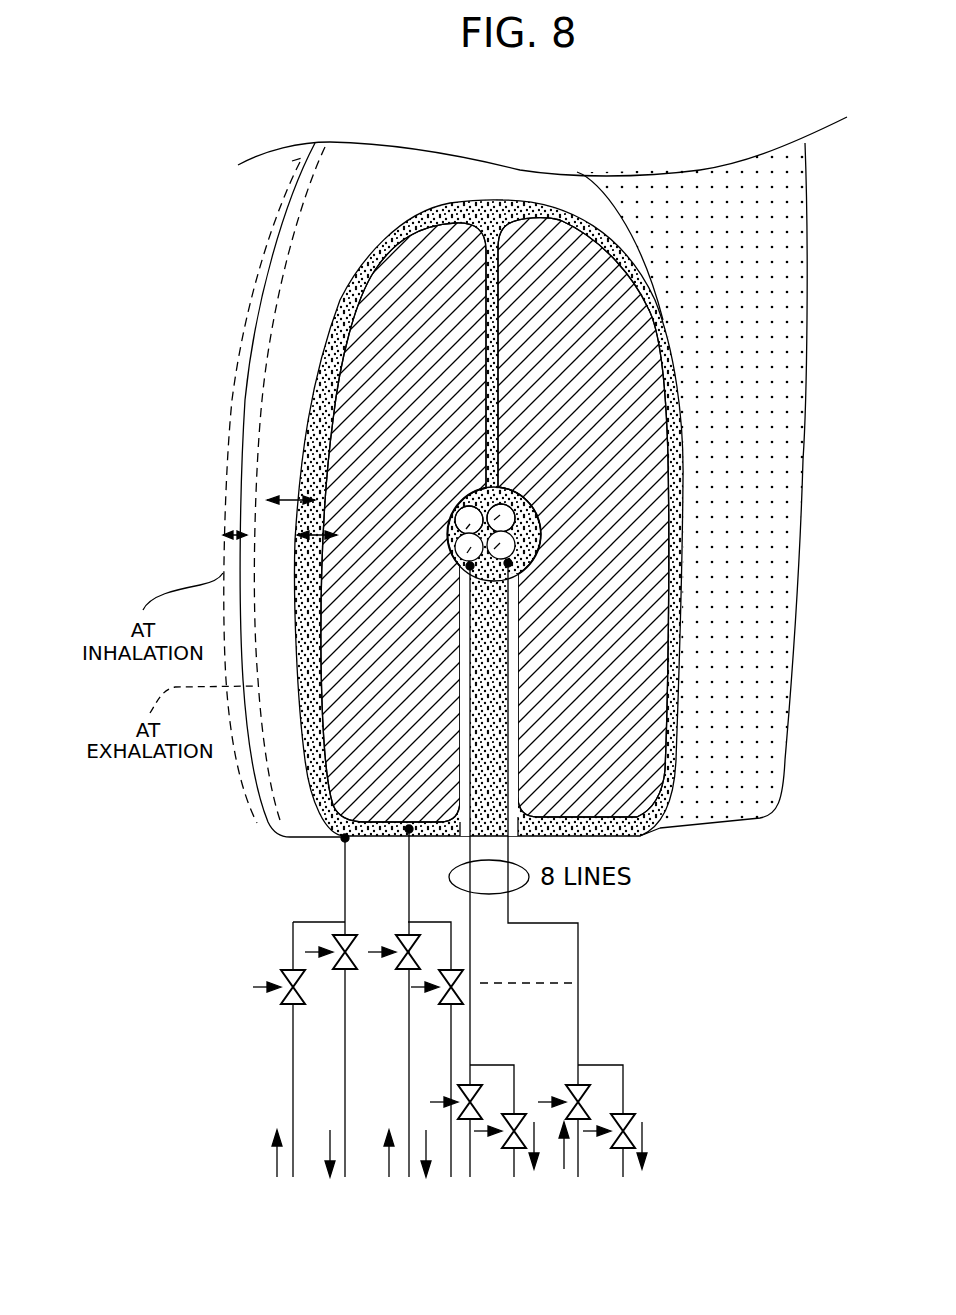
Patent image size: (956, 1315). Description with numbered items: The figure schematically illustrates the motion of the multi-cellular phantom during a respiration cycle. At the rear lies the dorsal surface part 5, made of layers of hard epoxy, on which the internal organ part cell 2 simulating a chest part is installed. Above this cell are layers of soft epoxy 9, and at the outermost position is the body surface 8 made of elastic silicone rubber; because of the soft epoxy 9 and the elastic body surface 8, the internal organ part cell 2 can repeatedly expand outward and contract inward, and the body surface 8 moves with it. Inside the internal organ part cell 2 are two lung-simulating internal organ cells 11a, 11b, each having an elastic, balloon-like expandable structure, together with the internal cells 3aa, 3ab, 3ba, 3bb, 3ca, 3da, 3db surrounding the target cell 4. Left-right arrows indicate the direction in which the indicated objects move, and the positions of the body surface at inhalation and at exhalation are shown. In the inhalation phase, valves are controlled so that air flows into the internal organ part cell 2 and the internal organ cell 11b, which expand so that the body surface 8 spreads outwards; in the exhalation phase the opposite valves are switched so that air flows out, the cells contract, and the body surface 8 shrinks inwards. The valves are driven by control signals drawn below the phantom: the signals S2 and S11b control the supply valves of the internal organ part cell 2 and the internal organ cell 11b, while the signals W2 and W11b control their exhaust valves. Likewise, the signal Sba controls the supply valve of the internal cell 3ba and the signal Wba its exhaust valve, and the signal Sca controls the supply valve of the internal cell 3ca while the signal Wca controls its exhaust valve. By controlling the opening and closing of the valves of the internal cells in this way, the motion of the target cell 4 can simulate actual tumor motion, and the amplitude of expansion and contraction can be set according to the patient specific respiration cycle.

The internal organ part cell 2 is at (338, 313).
The dorsal surface part 5 is at (808, 258).
The body surface 8 is at (240, 450).
The soft epoxy 9 is at (375, 192).
The target cell 4 is at (458, 541).
The internal cell 3aa is at (515, 516).
The internal cell 3ab is at (506, 504).
The internal cell 3ba is at (510, 565).
The internal cell 3bb is at (515, 543).
The internal cell 3ca is at (477, 580).
The internal cell 3da is at (455, 512).
The internal cell 3db is at (473, 506).
The internal organ cell 11a is at (647, 808).
The internal organ cell 11b is at (303, 750).
The signal S2 is at (260, 985).
The signal W2 is at (320, 956).
The signal S11b is at (377, 952).
The signal W11b is at (422, 993).
The signal Sca is at (454, 1100).
The signal Sba is at (544, 1102).
The signal Wca is at (488, 1134).
The signal Wba is at (597, 1134).